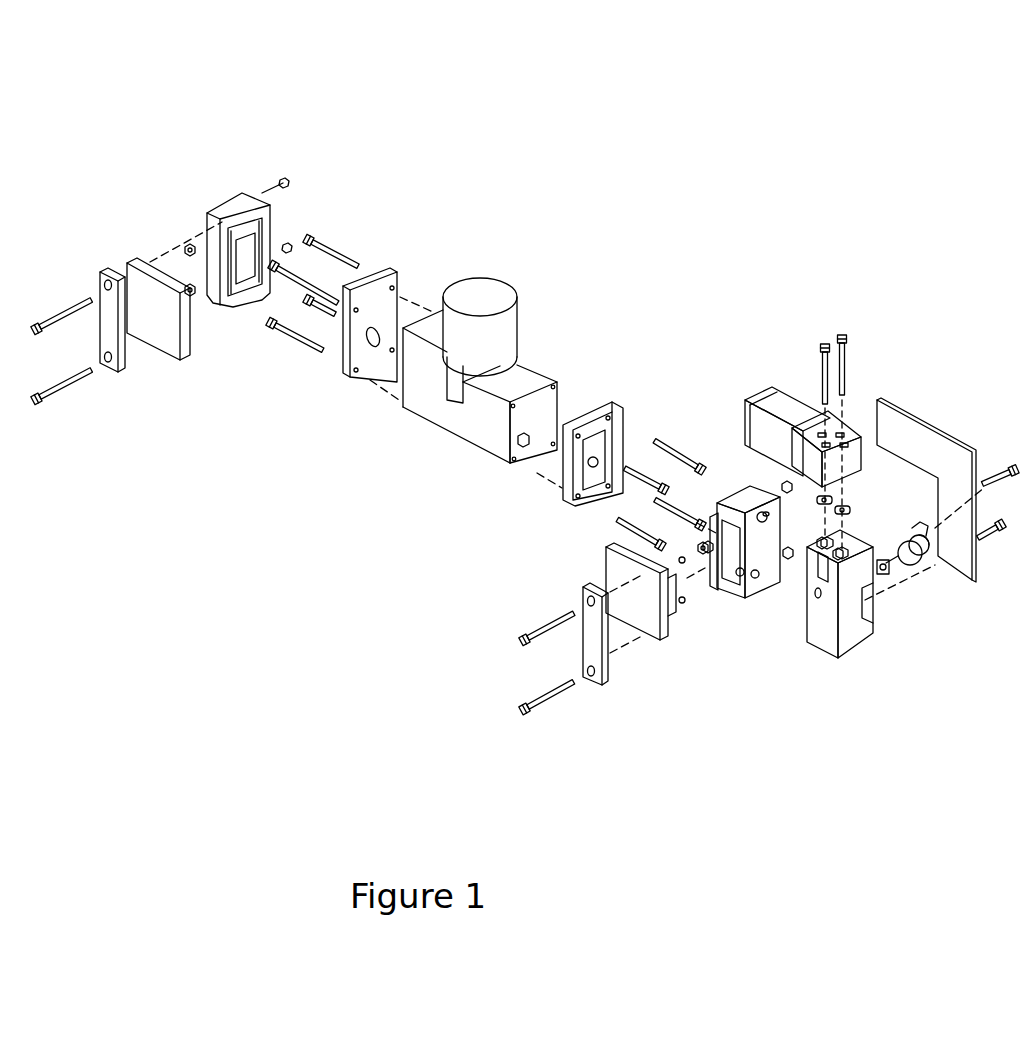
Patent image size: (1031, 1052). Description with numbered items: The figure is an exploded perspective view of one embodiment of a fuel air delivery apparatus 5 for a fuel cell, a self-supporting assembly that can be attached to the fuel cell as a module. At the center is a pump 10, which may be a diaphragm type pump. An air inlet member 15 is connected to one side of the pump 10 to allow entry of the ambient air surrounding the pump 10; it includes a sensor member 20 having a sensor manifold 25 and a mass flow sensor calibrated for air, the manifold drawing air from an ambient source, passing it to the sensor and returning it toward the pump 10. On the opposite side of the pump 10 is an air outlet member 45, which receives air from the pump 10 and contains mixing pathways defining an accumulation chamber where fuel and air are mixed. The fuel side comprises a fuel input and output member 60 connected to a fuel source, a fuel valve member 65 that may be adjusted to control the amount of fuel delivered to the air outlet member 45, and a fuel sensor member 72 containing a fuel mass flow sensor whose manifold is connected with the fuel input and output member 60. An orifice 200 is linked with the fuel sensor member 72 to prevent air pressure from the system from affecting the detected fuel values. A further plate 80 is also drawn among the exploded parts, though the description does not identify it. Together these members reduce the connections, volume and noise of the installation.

The fuel air delivery apparatus 5 is at (451, 106).
The pump 10 is at (483, 305).
The air inlet member 15 is at (375, 297).
The sensor member 20 is at (153, 314).
The sensor manifold 25 is at (233, 205).
The air outlet member 45 is at (600, 423).
The fuel input and output member 60 is at (827, 627).
The fuel valve member 65 is at (783, 407).
The fuel sensor member 72 is at (762, 553).
The cover plate 80 is at (642, 597).
The orifice 200 is at (703, 553).